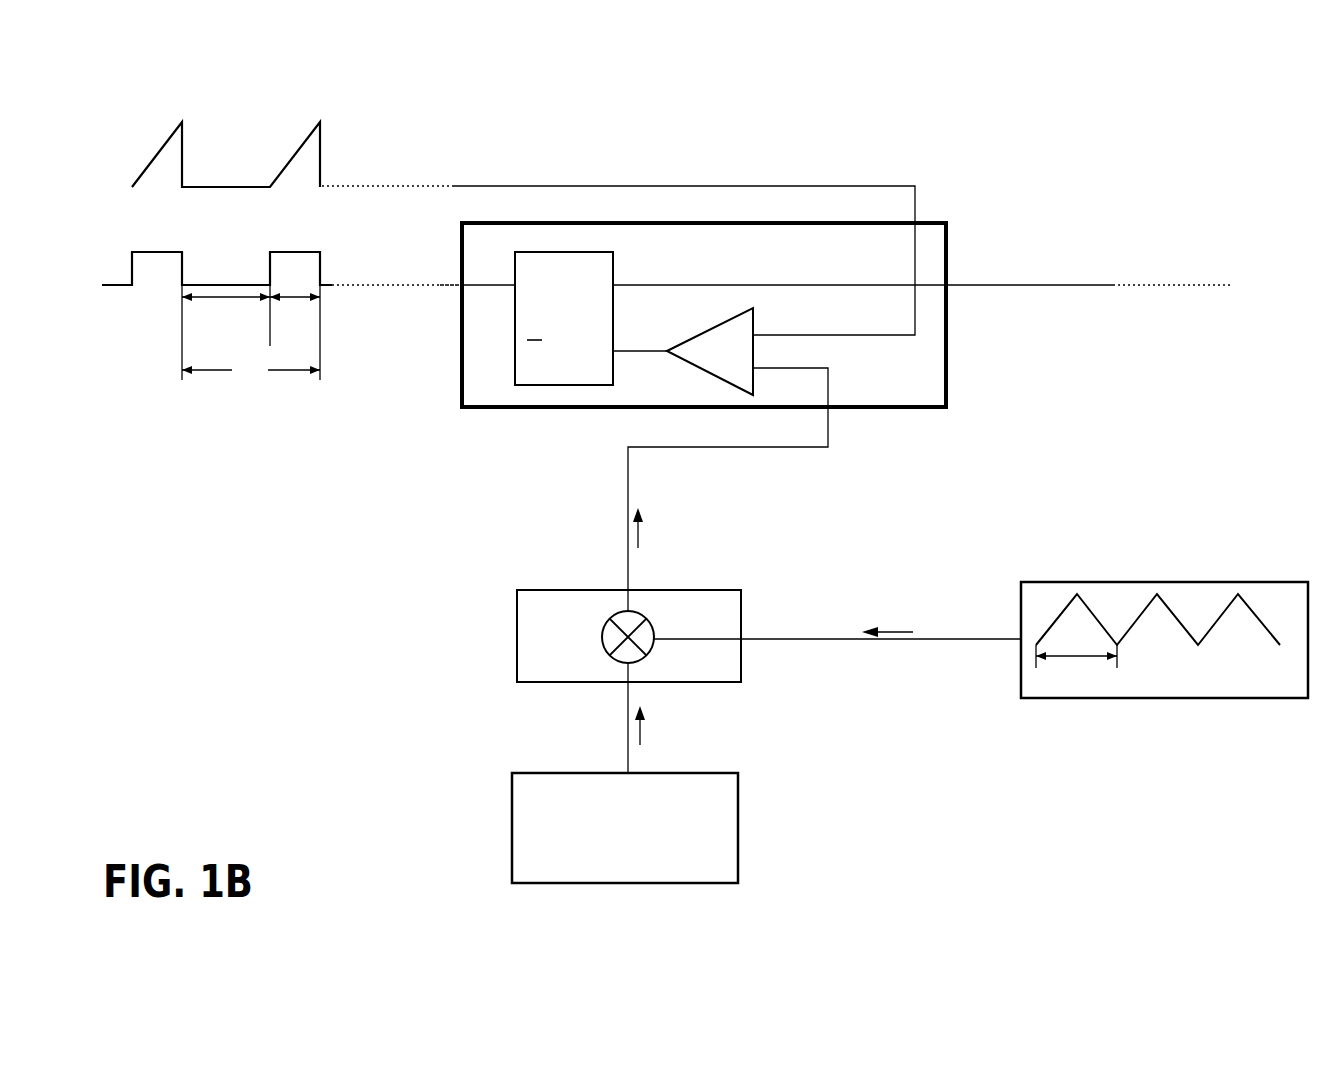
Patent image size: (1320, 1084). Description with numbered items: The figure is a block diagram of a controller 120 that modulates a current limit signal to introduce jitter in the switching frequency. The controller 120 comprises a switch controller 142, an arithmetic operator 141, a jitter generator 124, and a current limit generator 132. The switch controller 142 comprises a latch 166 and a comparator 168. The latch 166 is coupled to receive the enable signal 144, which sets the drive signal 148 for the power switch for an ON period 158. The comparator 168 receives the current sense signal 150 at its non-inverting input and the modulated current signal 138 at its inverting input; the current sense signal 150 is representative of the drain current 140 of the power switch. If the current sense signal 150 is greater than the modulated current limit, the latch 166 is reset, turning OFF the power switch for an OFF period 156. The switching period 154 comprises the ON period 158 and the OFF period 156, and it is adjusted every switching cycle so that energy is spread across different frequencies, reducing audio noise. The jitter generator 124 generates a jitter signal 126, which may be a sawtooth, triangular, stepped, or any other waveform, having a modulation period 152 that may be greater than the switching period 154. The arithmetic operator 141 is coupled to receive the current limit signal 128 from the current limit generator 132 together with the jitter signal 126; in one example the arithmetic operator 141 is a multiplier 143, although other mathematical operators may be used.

The controller 120 is at (1268, 106).
The drain current 140 is at (122, 130).
The current sense signal 150 is at (543, 182).
The drive signal 148 is at (353, 235).
The OFF period 156 is at (199, 332).
The ON period 158 is at (310, 337).
The switching period 154 is at (250, 380).
The switch controller 142 is at (937, 222).
The enable signal 144 is at (1068, 257).
The latch 166 is at (613, 252).
The comparator 168 is at (695, 330).
The modulated current signal 138 is at (686, 515).
The arithmetic operator 141 is at (550, 588).
The multiplier 143 is at (602, 637).
The jitter signal 126 is at (893, 598).
The jitter generator 124 is at (1215, 578).
The modulation period 152 is at (1095, 683).
The current limit generator 132 is at (567, 770).
The current limit signal 128 is at (718, 735).